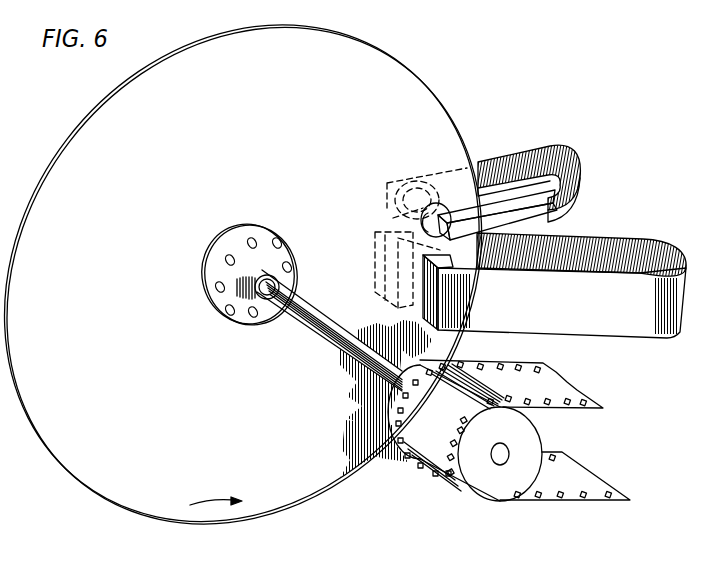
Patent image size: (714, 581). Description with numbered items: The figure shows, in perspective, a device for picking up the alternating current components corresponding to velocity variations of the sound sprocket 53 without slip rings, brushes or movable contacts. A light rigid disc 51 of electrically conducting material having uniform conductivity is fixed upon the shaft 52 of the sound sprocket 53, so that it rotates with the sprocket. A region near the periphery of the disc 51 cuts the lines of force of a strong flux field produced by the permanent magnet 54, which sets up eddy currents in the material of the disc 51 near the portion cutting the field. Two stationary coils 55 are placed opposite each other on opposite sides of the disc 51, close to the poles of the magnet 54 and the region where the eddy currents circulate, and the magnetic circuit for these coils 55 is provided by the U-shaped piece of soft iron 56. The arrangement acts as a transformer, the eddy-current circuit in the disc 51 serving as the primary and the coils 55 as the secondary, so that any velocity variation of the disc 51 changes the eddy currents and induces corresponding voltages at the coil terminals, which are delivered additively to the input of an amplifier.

The disc 51 is at (430, 104).
The shaft 52 is at (300, 318).
The sound sprocket 53 is at (587, 409).
The magnet 54 is at (604, 232).
The coils 55 is at (405, 238).
The U-shaped piece of soft iron 56 is at (517, 154).